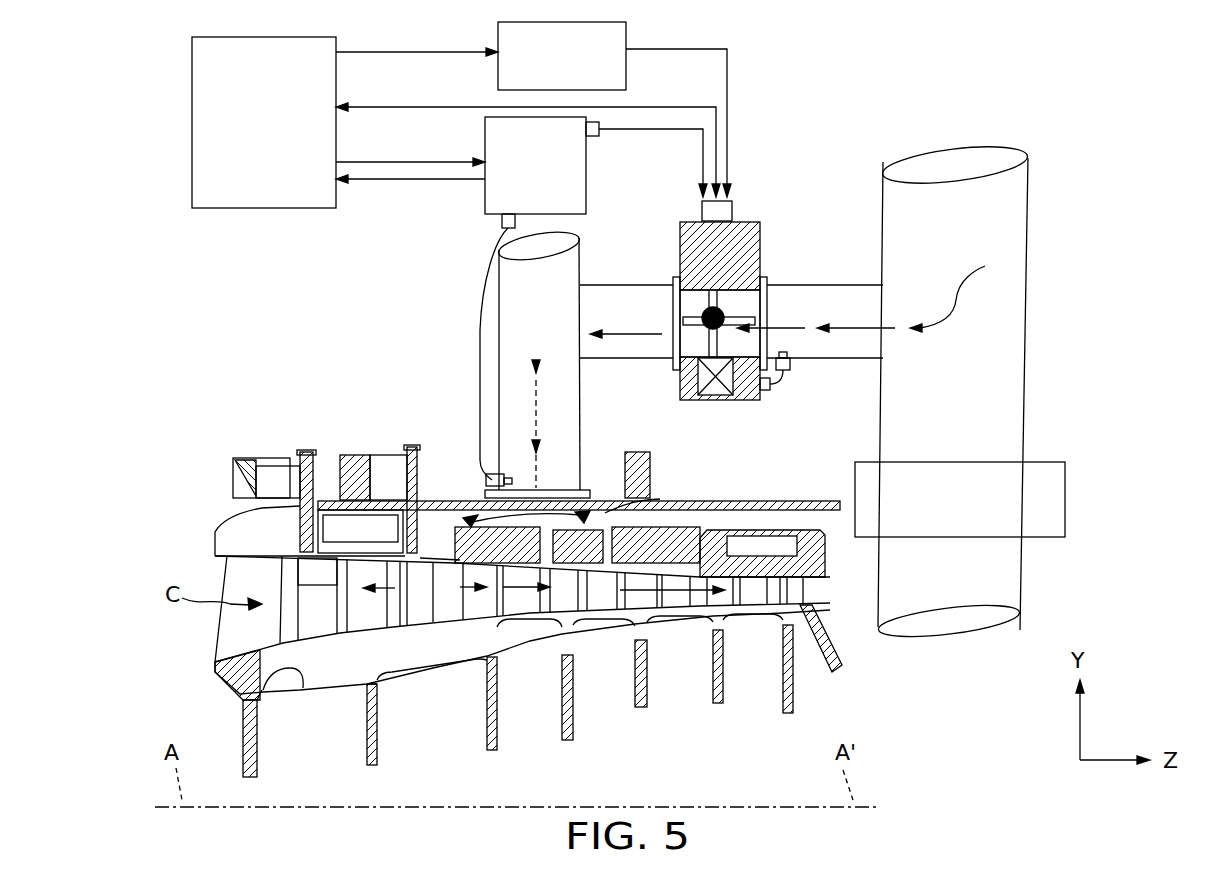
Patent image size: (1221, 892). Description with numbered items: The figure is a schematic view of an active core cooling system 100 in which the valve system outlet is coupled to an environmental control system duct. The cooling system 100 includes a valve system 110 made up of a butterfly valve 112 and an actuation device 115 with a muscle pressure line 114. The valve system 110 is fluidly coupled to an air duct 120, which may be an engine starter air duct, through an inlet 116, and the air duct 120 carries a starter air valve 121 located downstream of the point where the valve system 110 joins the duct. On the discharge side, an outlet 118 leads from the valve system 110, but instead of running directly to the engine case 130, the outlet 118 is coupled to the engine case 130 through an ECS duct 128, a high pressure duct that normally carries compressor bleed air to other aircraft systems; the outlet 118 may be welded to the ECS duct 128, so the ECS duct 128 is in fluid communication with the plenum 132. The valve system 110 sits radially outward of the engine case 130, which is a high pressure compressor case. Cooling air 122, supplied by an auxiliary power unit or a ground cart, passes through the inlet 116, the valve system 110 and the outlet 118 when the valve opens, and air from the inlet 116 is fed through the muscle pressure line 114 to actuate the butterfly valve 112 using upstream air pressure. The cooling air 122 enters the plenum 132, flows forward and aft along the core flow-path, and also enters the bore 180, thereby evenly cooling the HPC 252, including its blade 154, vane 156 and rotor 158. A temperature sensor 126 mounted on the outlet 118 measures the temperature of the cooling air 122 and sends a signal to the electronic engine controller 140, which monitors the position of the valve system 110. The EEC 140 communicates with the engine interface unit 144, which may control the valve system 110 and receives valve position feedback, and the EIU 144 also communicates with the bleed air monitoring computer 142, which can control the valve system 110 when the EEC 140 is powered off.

The active core cooling system 100 is at (836, 102).
The valve system 110 is at (745, 250).
The butterfly valve 112 is at (762, 308).
The muscle pressure line 114 is at (780, 386).
The actuation device 115 is at (712, 398).
The inlet 116 is at (830, 357).
The outlet 118 is at (623, 355).
The air duct 120 is at (1010, 366).
The starter air valve 121 is at (1048, 515).
The cooling air 122 is at (395, 588).
The temperature sensor 126 is at (480, 474).
The environmental control system (ECS) duct 128 is at (580, 283).
The engine case 130 is at (462, 500).
The plenum 132 is at (608, 512).
The electronic engine controller (EEC) 140 is at (565, 197).
The bleed air monitoring computer (BMC) 142 is at (510, 70).
The engine interface unit (EIU) 144 is at (282, 208).
The blade 154 is at (269, 646).
The vane 156 is at (334, 583).
The rotor 158 is at (380, 736).
The bore 180 is at (697, 718).
The high pressure compressor (HPC) 252 is at (166, 542).